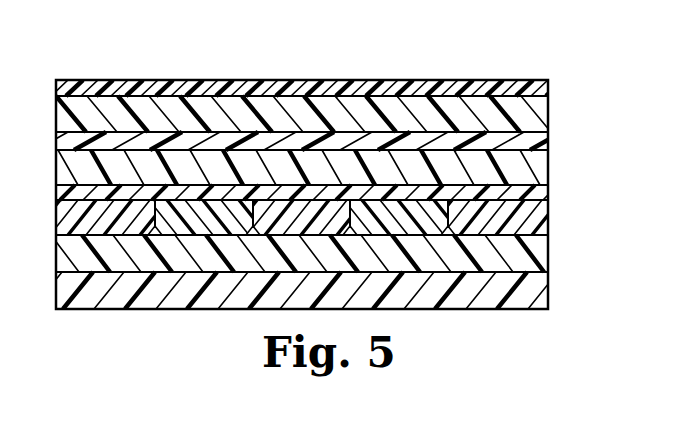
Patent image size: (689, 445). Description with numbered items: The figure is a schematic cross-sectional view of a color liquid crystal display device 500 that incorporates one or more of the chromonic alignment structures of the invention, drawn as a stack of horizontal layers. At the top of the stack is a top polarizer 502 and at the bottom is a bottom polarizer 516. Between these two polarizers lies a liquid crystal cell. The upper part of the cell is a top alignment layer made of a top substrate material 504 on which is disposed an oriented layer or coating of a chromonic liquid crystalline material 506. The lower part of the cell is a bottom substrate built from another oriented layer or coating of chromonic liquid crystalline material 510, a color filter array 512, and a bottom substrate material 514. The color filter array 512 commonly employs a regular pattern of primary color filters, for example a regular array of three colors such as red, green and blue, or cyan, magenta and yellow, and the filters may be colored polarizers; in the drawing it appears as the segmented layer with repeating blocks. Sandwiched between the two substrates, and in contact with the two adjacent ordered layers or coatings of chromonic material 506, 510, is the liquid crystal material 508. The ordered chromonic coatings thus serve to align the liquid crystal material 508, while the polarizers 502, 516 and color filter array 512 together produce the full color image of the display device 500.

The color liquid crystal display device 500 is at (470, 53).
The top polarizer 502 is at (530, 88).
The top substrate material 504 is at (517, 110).
The chromonic liquid crystalline material 506 is at (507, 138).
The liquid crystal material 508 is at (522, 163).
The chromonic liquid crystalline material 510 is at (518, 193).
The color filter array 512 is at (535, 219).
The bottom substrate material 514 is at (517, 255).
The bottom polarizer 516 is at (512, 287).